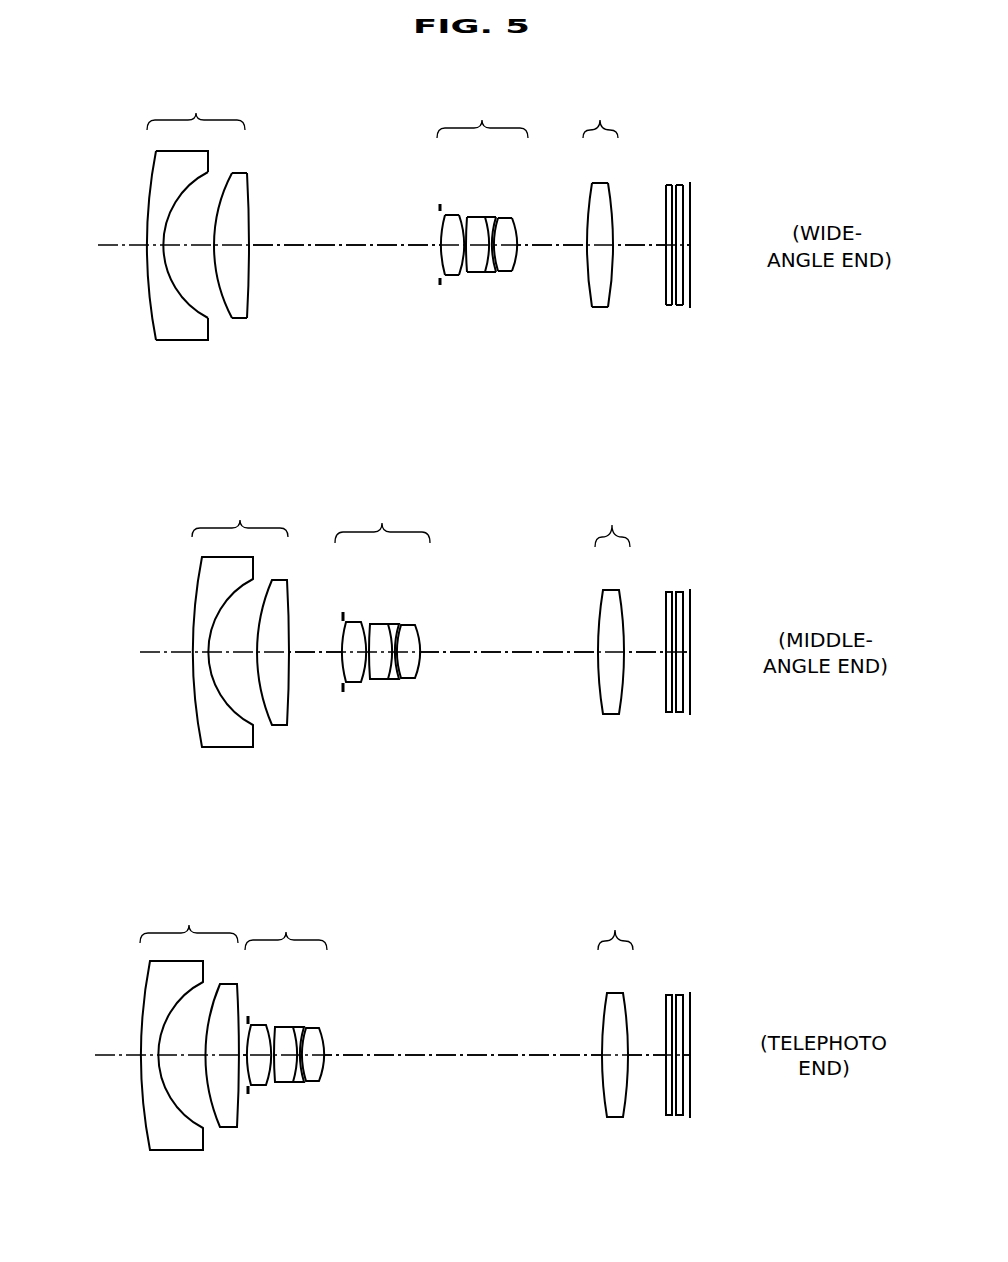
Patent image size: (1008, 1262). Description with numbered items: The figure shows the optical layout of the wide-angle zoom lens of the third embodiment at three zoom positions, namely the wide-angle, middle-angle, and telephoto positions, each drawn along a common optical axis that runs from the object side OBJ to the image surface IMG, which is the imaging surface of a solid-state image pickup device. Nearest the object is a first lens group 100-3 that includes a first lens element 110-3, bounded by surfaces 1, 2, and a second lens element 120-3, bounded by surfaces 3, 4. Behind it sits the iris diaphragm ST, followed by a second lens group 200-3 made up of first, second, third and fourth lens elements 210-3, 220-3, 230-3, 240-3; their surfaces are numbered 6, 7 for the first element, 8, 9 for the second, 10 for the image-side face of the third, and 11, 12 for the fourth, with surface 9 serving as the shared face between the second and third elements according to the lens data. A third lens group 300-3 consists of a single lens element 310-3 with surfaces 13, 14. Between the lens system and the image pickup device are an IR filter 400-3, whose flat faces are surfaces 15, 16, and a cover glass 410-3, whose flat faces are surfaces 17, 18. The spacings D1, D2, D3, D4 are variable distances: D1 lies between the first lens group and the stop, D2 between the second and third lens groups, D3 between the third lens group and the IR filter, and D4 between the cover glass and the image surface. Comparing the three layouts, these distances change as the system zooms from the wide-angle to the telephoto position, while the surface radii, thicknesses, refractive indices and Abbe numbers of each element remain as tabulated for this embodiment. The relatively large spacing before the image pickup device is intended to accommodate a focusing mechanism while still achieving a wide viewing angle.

The first surface 1 is at (150, 292).
The second surface 2 is at (163, 262).
The third surface 3 is at (218, 220).
The fourth surface 4 is at (245, 225).
The sixth surface 6 is at (443, 230).
The seventh surface 7 is at (462, 237).
The eighth surface 8 is at (467, 248).
The ninth surface 9 is at (457, 268).
The tenth surface 10 is at (493, 232).
The eleventh surface 11 is at (500, 233).
The twelfth surface 12 is at (516, 238).
The thirteenth surface 13 is at (590, 217).
The fourteenth surface 14 is at (612, 227).
The fifteenth surface 15 is at (668, 215).
The sixteenth surface 16 is at (672, 222).
The seventeenth surface 17 is at (677, 228).
The eighteenth surface 18 is at (684, 235).
The first lens group 100-3 is at (198, 617).
The first lens element 110-3 is at (173, 650).
The second lens element 120-3 is at (253, 642).
The second lens group 200-3 is at (407, 593).
The first lens element 210-3 is at (355, 632).
The second lens element 220-3 is at (383, 649).
The third lens element 230-3 is at (431, 624).
The fourth lens element 240-3 is at (436, 633).
The third lens group 300-3 is at (618, 605).
The lens element 310-3 is at (622, 646).
The IR filter 400-3 is at (700, 622).
The cover glass 410-3 is at (719, 608).
The iris diaphragm ST is at (440, 206).
The object side OBJ is at (366, 651).
The image surface IMG is at (690, 287).
The variable distance D1 is at (310, 248).
The variable distance D2 is at (557, 246).
The variable distance D3 is at (638, 246).
The variable distance D4 is at (686, 255).